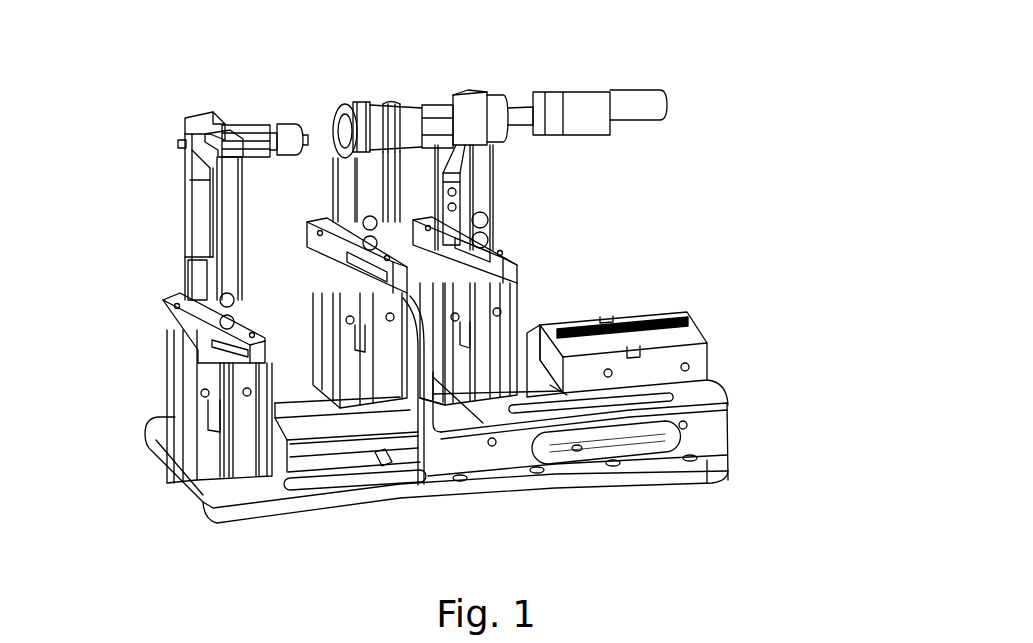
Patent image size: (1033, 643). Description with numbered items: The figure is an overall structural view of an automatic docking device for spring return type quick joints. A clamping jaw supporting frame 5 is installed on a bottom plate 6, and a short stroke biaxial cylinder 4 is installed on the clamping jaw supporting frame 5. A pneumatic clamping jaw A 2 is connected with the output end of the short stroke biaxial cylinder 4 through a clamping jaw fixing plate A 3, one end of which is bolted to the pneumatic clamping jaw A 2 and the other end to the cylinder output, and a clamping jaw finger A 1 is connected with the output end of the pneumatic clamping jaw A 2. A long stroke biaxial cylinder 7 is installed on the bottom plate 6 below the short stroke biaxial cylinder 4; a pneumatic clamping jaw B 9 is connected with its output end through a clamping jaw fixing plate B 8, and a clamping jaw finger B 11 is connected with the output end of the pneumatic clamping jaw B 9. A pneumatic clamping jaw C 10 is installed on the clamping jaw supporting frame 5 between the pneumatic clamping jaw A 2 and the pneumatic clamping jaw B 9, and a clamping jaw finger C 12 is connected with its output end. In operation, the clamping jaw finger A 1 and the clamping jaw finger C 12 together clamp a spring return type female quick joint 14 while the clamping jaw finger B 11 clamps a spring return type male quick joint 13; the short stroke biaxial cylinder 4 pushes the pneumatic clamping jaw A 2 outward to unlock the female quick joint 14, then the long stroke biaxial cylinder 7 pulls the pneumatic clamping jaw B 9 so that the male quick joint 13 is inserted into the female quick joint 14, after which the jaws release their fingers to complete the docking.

The clamping jaw finger A 1 is at (480, 192).
The pneumatic clamping jaw A 2 is at (483, 282).
The clamping jaw fixing plate A 3 is at (560, 337).
The short stroke biaxial cylinder 4 is at (655, 367).
The clamping jaw supporting frame 5 is at (690, 437).
The bottom plate 6 is at (515, 495).
The long stroke biaxial cylinder 7 is at (597, 440).
The clamping jaw fixing plate B 8 is at (272, 443).
The pneumatic clamping jaw B 9 is at (208, 413).
The pneumatic clamping jaw C 10 is at (183, 307).
The clamping jaw finger B 11 is at (230, 262).
The clamping jaw finger C 12 is at (375, 202).
The male quick joint 13 is at (213, 128).
The female quick joint 14 is at (405, 118).